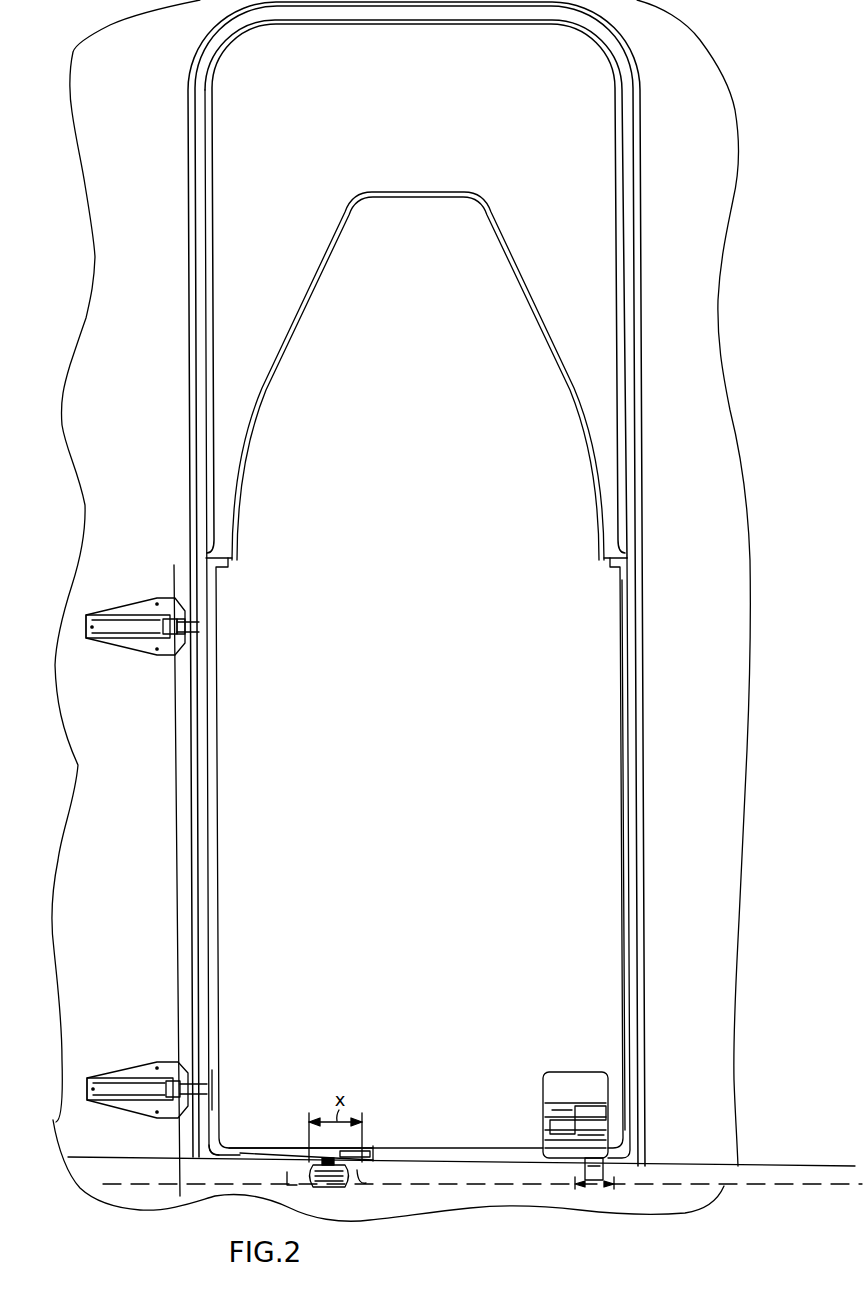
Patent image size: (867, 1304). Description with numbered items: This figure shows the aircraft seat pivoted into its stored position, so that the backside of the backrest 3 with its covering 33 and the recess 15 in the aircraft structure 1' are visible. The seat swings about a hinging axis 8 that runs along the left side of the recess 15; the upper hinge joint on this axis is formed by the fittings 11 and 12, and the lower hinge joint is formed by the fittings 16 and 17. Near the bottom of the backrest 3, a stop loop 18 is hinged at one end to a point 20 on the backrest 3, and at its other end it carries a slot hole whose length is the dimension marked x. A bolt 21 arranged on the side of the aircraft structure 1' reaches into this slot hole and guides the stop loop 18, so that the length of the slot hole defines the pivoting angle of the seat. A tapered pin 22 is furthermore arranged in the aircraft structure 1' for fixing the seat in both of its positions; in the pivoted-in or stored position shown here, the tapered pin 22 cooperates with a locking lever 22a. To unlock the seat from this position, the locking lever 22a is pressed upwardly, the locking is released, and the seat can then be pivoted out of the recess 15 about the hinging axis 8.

The aircraft structure 1' is at (457, 628).
The backrest 3 is at (488, 717).
The hinging axis 8 is at (178, 885).
The fitting 11 is at (141, 605).
The fitting 12 is at (200, 626).
The recess 15 is at (480, 112).
The fitting 16 is at (140, 1072).
The fitting 17 is at (211, 1080).
The stop loop 18 is at (243, 1150).
The point 20 is at (222, 1147).
The bolt 21 is at (347, 1178).
The tapered pin 22 is at (598, 1181).
The locking lever 22a is at (558, 1143).
The covering 33 is at (610, 765).